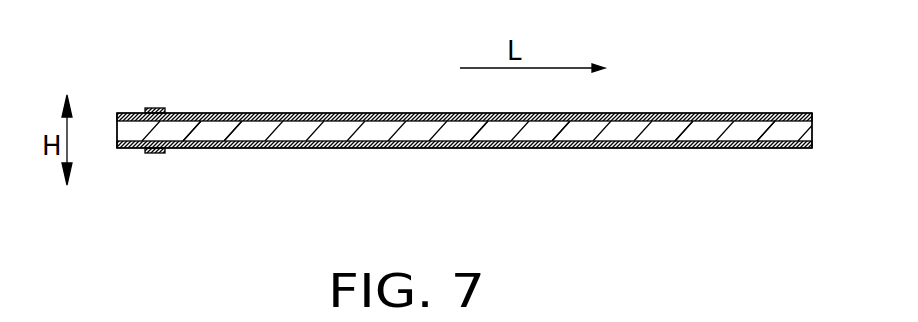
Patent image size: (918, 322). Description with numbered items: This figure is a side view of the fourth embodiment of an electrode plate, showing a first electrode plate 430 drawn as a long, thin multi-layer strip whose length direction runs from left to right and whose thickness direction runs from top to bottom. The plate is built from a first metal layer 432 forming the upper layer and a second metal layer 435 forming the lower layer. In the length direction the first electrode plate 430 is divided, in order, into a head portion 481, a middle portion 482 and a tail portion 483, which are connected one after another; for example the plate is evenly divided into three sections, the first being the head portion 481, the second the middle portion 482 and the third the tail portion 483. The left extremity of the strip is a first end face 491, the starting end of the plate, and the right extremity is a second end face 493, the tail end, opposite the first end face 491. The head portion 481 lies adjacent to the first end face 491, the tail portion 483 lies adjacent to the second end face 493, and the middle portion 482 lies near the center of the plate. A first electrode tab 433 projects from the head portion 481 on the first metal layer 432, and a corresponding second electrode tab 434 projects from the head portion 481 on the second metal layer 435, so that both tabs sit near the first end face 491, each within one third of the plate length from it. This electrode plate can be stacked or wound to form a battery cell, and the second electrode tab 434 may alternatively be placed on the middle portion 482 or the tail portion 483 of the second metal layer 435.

The first electrode plate 430 is at (368, 52).
The first metal layer 432 is at (315, 115).
The second metal layer 435 is at (315, 148).
The first electrode tab 433 is at (152, 108).
The second electrode tab 434 is at (152, 153).
The head portion 481 is at (216, 137).
The middle portion 482 is at (507, 130).
The tail portion 483 is at (710, 130).
The first end face 491 is at (117, 133).
The second end face 493 is at (812, 128).